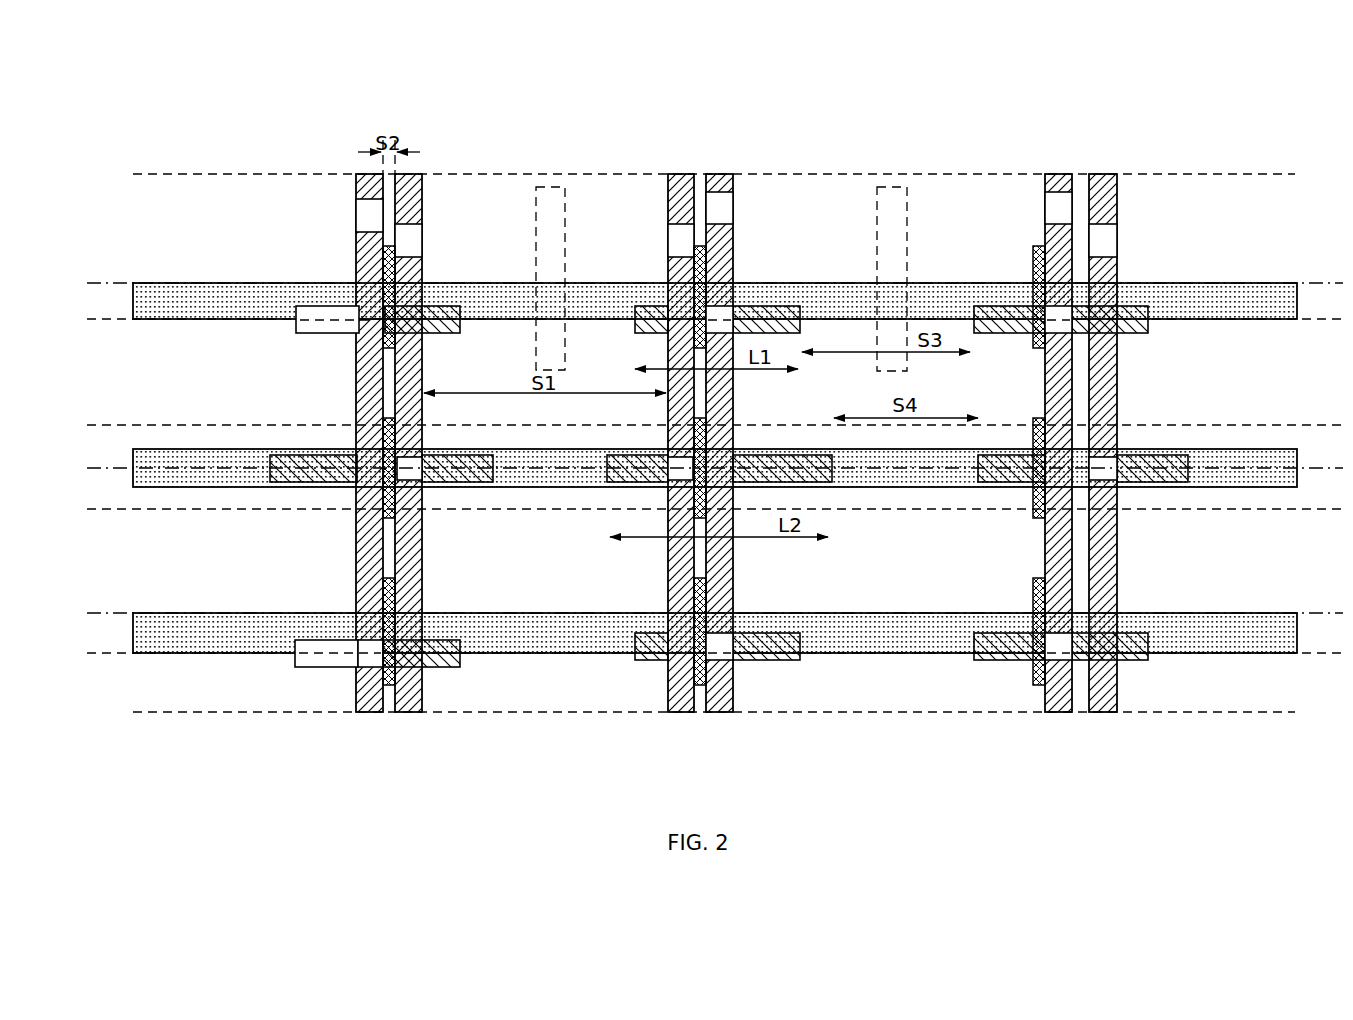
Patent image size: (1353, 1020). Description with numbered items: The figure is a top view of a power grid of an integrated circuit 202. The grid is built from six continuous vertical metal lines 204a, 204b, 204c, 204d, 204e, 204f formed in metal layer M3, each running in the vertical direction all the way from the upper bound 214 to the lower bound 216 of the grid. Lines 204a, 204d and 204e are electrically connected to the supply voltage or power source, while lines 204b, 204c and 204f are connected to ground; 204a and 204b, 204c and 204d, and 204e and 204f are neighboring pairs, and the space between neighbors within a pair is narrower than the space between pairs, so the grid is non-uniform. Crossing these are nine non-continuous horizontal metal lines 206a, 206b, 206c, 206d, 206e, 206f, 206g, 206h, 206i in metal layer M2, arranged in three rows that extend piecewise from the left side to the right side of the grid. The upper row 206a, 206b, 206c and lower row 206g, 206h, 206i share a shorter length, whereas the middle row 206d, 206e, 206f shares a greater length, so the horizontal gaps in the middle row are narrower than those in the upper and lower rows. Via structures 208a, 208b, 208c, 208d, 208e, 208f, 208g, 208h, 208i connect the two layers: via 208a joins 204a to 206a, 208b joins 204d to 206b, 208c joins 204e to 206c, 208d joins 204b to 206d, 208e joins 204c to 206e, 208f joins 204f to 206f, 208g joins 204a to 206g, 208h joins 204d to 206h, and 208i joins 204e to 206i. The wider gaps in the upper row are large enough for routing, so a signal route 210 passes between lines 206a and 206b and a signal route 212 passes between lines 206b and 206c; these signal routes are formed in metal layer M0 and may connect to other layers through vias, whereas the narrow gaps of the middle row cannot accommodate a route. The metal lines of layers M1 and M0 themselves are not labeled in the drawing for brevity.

The integrated circuit 202 is at (140, 83).
The vertical metal line 204a is at (368, 175).
The vertical metal line 204b is at (409, 175).
The vertical metal line 204c is at (681, 175).
The vertical metal line 204d is at (721, 175).
The vertical metal line 204e is at (1058, 175).
The vertical metal line 204f is at (1101, 175).
The horizontal metal line 206a is at (318, 305).
The horizontal metal line 206b is at (650, 305).
The horizontal metal line 206c is at (990, 305).
The horizontal metal line 206d is at (284, 483).
The horizontal metal line 206e is at (772, 462).
The horizontal metal line 206f is at (992, 476).
The horizontal metal line 206g is at (302, 668).
The horizontal metal line 206h is at (651, 661).
The horizontal metal line 206i is at (1000, 661).
The via structure 208a is at (366, 336).
The via structure 208b is at (740, 318).
The via structure 208c is at (1058, 334).
The via structure 208d is at (412, 486).
The via structure 208e is at (680, 470).
The via structure 208f is at (1104, 482).
The via structure 208g is at (370, 668).
The via structure 208h is at (718, 661).
The via structure 208i is at (1061, 661).
The signal route 210 is at (551, 198).
The signal route 212 is at (891, 198).
The upper bound 214 is at (1263, 173).
The lower bound 216 is at (1263, 713).
The metal layer M0 is at (1237, 281).
The metal layer M1 is at (1028, 235).